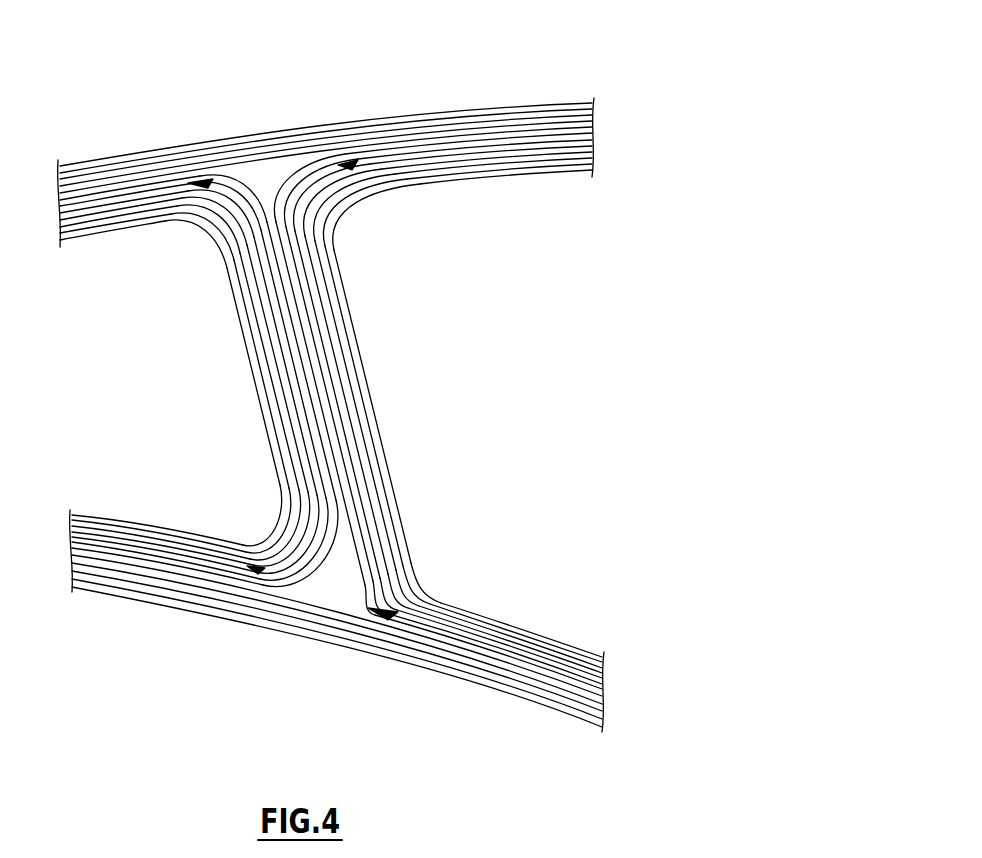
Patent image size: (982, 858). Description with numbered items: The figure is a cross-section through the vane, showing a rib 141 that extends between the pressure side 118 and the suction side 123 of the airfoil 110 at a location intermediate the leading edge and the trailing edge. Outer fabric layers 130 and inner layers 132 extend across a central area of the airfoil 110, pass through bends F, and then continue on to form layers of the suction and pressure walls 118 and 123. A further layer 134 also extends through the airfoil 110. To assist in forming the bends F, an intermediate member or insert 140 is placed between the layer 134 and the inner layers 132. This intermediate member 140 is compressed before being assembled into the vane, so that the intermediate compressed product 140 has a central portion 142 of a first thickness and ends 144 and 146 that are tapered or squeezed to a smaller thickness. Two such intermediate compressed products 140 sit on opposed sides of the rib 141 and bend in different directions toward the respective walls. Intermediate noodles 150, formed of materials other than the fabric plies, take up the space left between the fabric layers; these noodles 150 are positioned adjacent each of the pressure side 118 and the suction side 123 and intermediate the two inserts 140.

The airfoil 110 is at (575, 59).
The pressure side 118 is at (118, 590).
The suction side 123 is at (338, 116).
The outer fabric layers 130 is at (111, 173).
The inner layers 132 is at (428, 163).
The layer 134 is at (540, 127).
The intermediate member or insert 140 is at (287, 377).
The rib 141 is at (232, 355).
The central portion 142 is at (303, 227).
The end 144 is at (220, 200).
The end 146 is at (255, 572).
The intermediate noodles 150 is at (247, 175).
The bends F is at (203, 223).